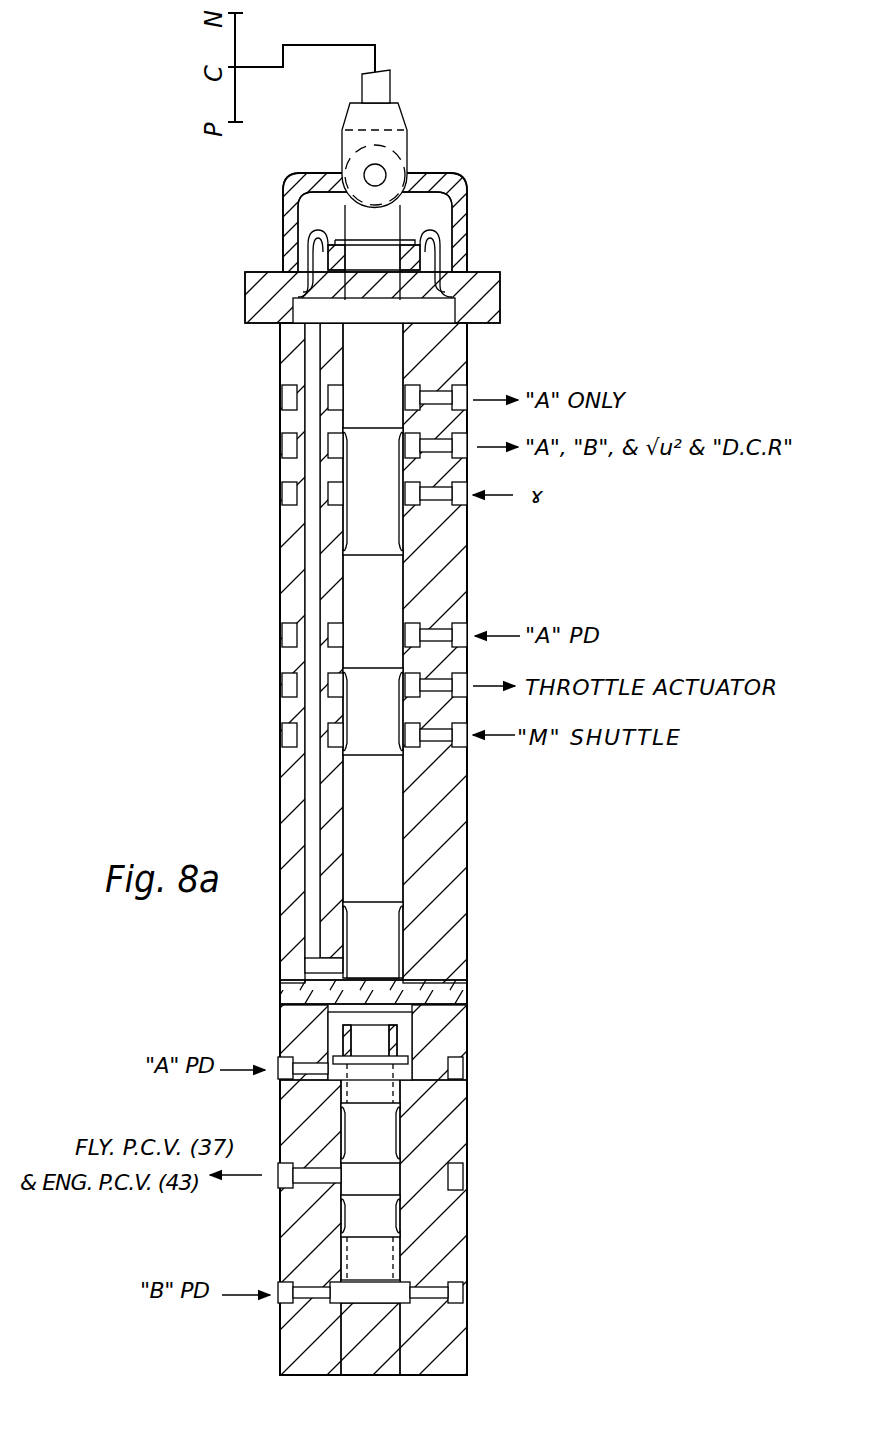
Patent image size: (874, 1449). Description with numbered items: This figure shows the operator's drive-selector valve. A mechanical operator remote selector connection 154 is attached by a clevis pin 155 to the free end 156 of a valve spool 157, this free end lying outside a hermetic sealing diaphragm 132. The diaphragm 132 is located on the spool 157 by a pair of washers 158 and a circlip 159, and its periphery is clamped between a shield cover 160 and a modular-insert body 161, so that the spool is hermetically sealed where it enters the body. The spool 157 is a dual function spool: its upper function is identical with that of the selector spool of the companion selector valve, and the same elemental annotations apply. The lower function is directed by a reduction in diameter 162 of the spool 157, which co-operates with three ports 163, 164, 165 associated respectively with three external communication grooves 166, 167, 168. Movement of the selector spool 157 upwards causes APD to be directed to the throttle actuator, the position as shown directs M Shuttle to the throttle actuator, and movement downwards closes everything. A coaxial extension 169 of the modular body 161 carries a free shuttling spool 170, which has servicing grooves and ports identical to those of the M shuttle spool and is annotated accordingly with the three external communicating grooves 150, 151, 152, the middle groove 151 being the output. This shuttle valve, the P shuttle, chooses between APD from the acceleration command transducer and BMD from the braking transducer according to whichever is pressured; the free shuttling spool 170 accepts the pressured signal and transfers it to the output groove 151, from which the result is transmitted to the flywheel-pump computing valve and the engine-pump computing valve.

The hermetic sealing diaphragm 132 is at (452, 248).
The external communicating groove 150 is at (462, 1070).
The output groove 151 is at (458, 1172).
The external communicating groove 152 is at (462, 1292).
The mechanical operator remote selector connection 154 is at (382, 90).
The clevis pin 155 is at (378, 172).
The free end 156 is at (383, 230).
The valve spool 157 is at (392, 357).
The washers 158 is at (322, 268).
The circlip 159 is at (345, 178).
The shield cover 160 is at (500, 273).
The modular-insert body 161 is at (292, 340).
The reduction in diameter 162 is at (402, 672).
The port 163 is at (332, 628).
The port 164 is at (332, 680).
The port 165 is at (332, 730).
The external communication groove 166 is at (285, 636).
The external communication groove 167 is at (285, 686).
The external communication groove 168 is at (285, 737).
The coaxial extension 169 is at (447, 1023).
The free shuttling spool 170 is at (385, 1183).